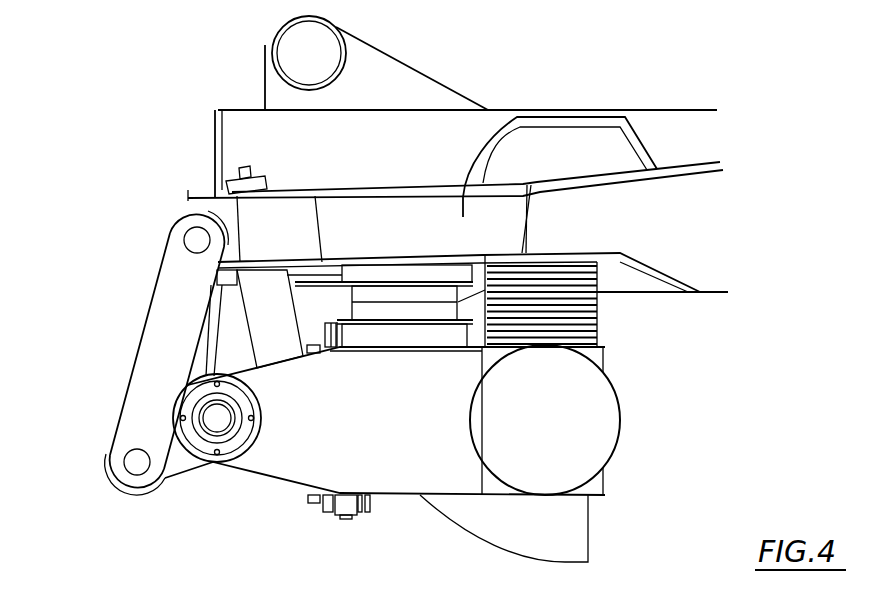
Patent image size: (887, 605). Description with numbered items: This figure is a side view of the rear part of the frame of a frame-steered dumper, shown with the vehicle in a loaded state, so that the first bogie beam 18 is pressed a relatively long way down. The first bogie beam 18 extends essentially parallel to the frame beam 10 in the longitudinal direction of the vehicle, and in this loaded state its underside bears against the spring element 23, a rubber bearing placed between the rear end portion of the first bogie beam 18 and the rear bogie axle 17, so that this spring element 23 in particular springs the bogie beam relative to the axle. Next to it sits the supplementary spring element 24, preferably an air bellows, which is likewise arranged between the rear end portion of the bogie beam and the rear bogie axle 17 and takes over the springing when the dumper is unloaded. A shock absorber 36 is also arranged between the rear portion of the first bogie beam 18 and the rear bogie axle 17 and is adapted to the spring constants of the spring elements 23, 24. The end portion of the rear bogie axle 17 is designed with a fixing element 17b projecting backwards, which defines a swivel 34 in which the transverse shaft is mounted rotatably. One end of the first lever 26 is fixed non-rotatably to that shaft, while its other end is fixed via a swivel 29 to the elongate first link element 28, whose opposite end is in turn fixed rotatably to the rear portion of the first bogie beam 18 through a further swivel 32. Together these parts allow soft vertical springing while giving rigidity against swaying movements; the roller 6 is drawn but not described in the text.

The frame beam 10 is at (455, 145).
The first bogie beam 18 is at (506, 114).
The swivel 32 is at (195, 240).
The first link element 28 is at (147, 367).
The swivel 29 is at (138, 458).
The shock absorber 36 is at (267, 317).
The swivel 34 is at (213, 422).
The first lever 26 is at (187, 470).
The fixing element 17b is at (302, 462).
The supplementary spring element 24 is at (413, 312).
The second rubber bearing 23 is at (593, 318).
The rear bogie axle 17 is at (597, 358).
The roller 6 is at (603, 443).